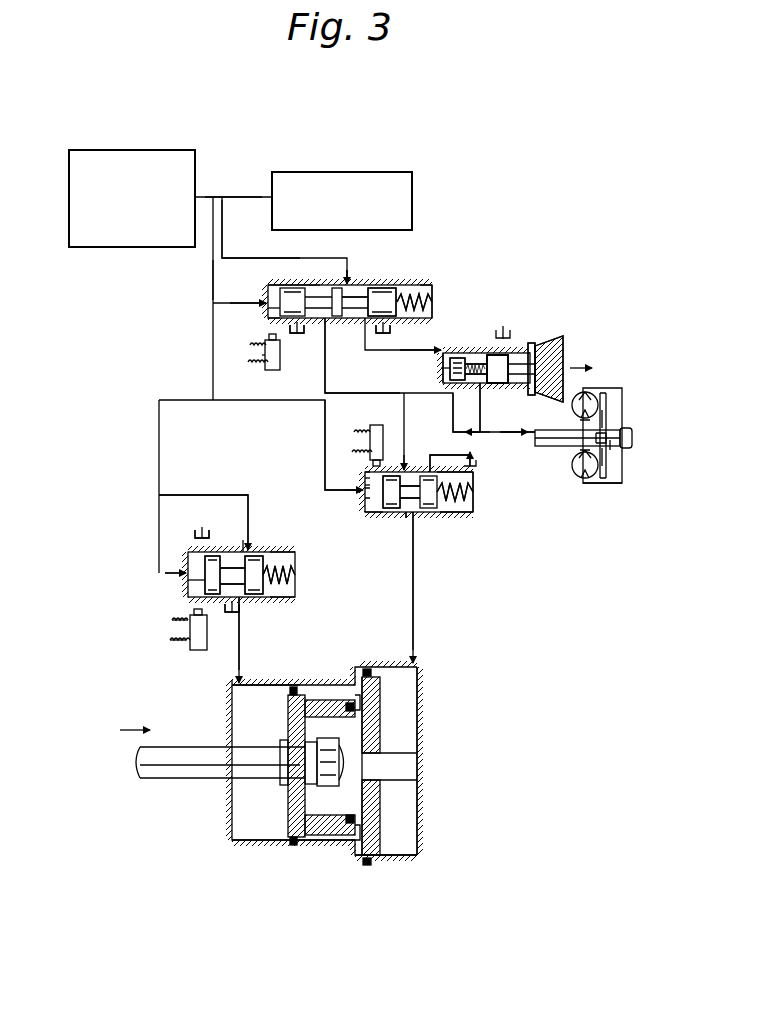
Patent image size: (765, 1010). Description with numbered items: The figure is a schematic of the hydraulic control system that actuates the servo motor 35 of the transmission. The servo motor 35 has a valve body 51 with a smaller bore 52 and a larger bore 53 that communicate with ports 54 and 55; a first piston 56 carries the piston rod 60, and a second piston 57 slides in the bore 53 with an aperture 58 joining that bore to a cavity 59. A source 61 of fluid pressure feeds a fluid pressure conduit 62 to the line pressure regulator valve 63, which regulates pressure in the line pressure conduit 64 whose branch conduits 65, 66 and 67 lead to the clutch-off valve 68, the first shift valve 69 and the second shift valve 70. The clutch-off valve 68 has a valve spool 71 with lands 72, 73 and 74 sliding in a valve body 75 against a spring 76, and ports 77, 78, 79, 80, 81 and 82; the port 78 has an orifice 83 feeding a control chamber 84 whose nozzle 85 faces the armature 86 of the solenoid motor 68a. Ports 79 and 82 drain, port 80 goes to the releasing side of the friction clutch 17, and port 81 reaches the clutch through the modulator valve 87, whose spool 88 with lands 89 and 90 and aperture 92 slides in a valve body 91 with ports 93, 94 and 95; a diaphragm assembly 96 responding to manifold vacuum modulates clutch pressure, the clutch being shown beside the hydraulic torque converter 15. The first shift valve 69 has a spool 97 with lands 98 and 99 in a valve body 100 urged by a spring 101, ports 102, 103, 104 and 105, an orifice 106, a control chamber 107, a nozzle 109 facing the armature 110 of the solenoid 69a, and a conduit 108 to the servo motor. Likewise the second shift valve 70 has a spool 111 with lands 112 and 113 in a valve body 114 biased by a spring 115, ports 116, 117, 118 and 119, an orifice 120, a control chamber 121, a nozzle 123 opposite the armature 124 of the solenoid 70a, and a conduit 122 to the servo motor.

The hydraulic torque converter 15 is at (590, 488).
The fluid pressure operated friction clutch 17 is at (608, 410).
The servo motor 35 is at (300, 850).
The valve body 51 is at (352, 862).
The bore 52 is at (235, 820).
The bore 53 is at (420, 810).
The port 54 is at (232, 700).
The port 55 is at (420, 700).
The first piston 56 is at (292, 812).
The second piston 57 is at (380, 835).
The aperture 58 is at (382, 766).
The cavity 59 is at (355, 806).
The piston rod 60 is at (180, 779).
The source of fluid pressure 61 is at (160, 150).
The fluid pressure conduit 62 is at (230, 197).
The line pressure regulator valve 63 is at (328, 172).
The line pressure conduit 64 is at (213, 268).
The branch conduit 65 is at (222, 258).
The branch conduit 66 is at (159, 500).
The branch conduit 67 is at (352, 403).
The clutch-off valve 68 is at (412, 284).
The solenoid motor 68a is at (283, 370).
The first shift valve 69 is at (273, 552).
The solenoid 69a is at (198, 650).
The second shift valve 70 is at (455, 520).
The solenoid 70a is at (385, 432).
The valve spool 71 is at (385, 290).
The land 72 is at (303, 284).
The land 73 is at (358, 292).
The land 74 is at (433, 305).
The valve body 75 is at (433, 290).
The spring 76 is at (433, 313).
The port 77 is at (350, 282).
The port 78 is at (266, 312).
The drain port 79 is at (298, 335).
The port 80 is at (330, 345).
The port 81 is at (330, 328).
The drain port 82 is at (386, 328).
The orifice 83 is at (266, 302).
The control chamber 84 is at (280, 283).
The nozzle 85 is at (266, 324).
The armature 86 is at (263, 355).
The modulator valve 87 is at (553, 322).
The valve spool 88 is at (498, 351).
The land 89 is at (453, 353).
The land 90 is at (575, 412).
The valve body 91 is at (483, 396).
The aperture 92 is at (445, 370).
The port 93 is at (478, 356).
The drain port 94 is at (530, 342).
The port 95 is at (460, 400).
The diaphragm assembly 96 is at (560, 346).
The valve spool 97 is at (229, 602).
The land 98 is at (222, 552).
The land 99 is at (290, 552).
The valve body 100 is at (298, 598).
The spring 101 is at (296, 588).
The drain port 102 is at (243, 550).
The port 103 is at (256, 550).
The port 104 is at (182, 573).
The port 105 is at (246, 598).
The orifice 106 is at (186, 586).
The control chamber 107 is at (190, 565).
The conduit 108 is at (241, 650).
The nozzle 109 is at (195, 620).
The armature 110 is at (190, 636).
The valve spool 111 is at (397, 516).
The land 112 is at (388, 516).
The land 113 is at (466, 516).
The valve body 114 is at (473, 514).
The spring 115 is at (475, 496).
The port 116 is at (472, 457).
The drain port 117 is at (475, 474).
The port 118 is at (347, 492).
The port 119 is at (410, 516).
The orifice 120 is at (372, 514).
The control chamber 121 is at (350, 485).
The conduit 122 is at (414, 642).
The nozzle 123 is at (352, 476).
The armature 124 is at (355, 462).